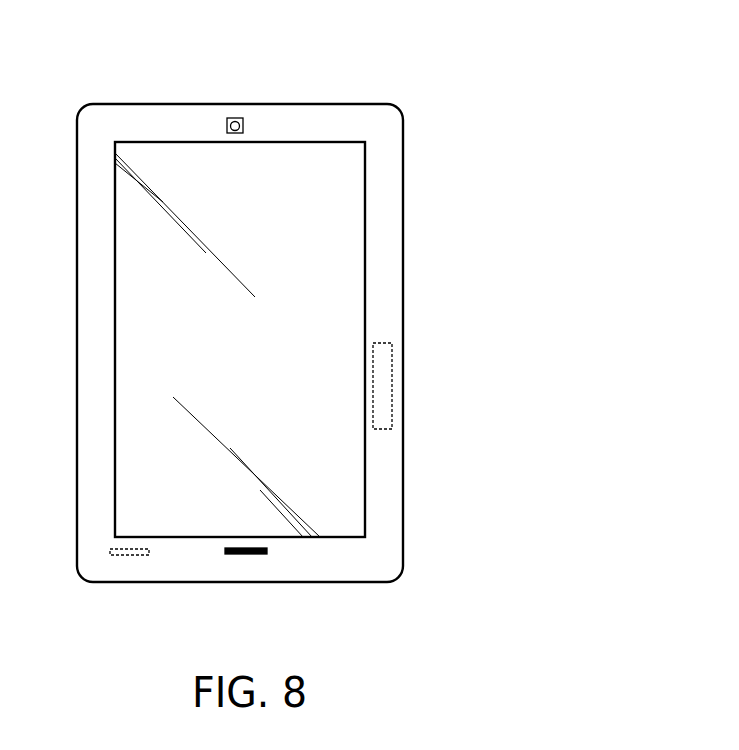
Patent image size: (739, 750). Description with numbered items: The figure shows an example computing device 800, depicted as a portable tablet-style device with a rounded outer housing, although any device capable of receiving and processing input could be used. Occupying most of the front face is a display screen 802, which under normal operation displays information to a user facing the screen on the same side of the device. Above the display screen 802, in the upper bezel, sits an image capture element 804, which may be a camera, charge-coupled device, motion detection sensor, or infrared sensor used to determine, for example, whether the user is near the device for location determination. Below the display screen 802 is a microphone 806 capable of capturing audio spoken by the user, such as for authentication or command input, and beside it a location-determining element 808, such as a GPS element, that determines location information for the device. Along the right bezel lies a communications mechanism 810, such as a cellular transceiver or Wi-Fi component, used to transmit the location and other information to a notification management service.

The computing device 800 is at (630, 108).
The display screen 802 is at (114, 258).
The image capture element 804 is at (228, 118).
The microphone 806 is at (253, 555).
The location-determining element 808 is at (127, 556).
The communications mechanism 810 is at (392, 383).